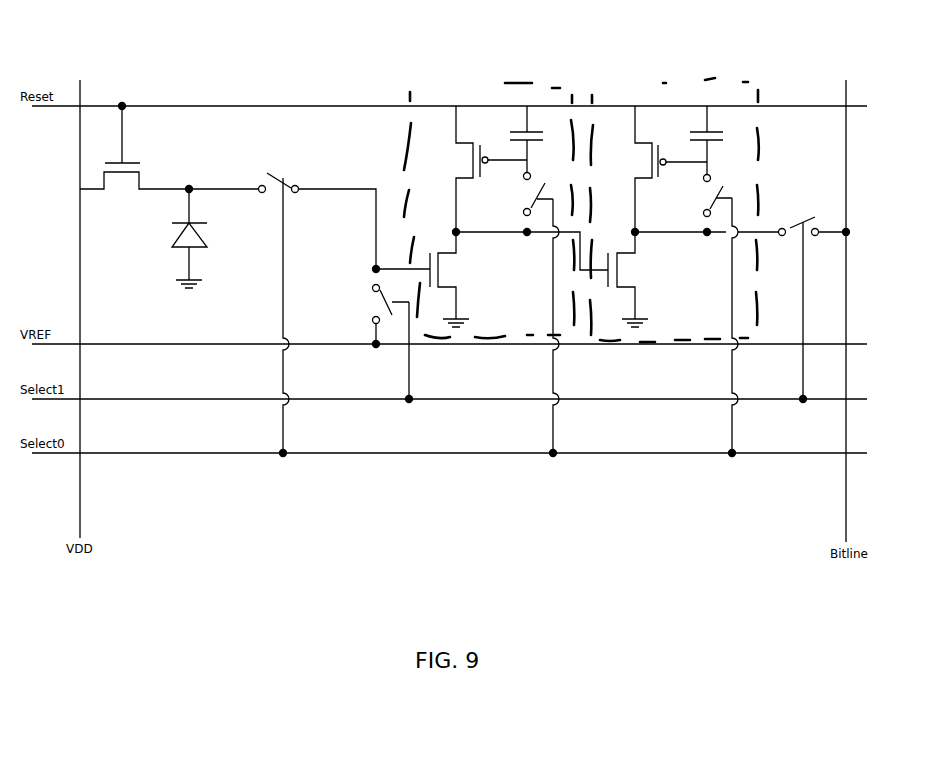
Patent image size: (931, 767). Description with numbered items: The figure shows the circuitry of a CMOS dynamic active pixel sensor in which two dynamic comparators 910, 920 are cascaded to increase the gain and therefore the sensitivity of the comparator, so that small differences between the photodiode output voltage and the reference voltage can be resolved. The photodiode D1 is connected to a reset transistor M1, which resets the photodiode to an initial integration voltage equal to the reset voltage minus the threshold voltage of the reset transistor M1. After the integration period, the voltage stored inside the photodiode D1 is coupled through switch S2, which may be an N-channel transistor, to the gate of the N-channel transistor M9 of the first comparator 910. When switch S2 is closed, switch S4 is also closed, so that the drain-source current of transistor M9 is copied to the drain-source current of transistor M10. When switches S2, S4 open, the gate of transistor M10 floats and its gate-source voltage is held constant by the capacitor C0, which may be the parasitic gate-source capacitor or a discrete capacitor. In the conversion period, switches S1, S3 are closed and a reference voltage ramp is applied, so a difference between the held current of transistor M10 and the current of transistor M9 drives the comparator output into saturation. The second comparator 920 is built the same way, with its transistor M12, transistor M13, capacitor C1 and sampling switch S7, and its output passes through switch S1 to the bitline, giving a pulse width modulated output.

The dynamic comparator 910 is at (427, 89).
The dynamic comparator 920 is at (600, 90).
The reset transistor M1 is at (169, 149).
The photodiode D1 is at (200, 238).
The switch S1 is at (799, 222).
The switch S2 is at (279, 179).
The switch S3 is at (391, 304).
The switch S4 is at (544, 198).
The switch S7 is at (723, 200).
The N-channel transistor M9 is at (422, 279).
The transistor M10 is at (485, 169).
The transistor M12 is at (629, 279).
The transistor M13 is at (664, 169).
The capacitor C0 is at (536, 143).
The capacitor C1 is at (716, 144).